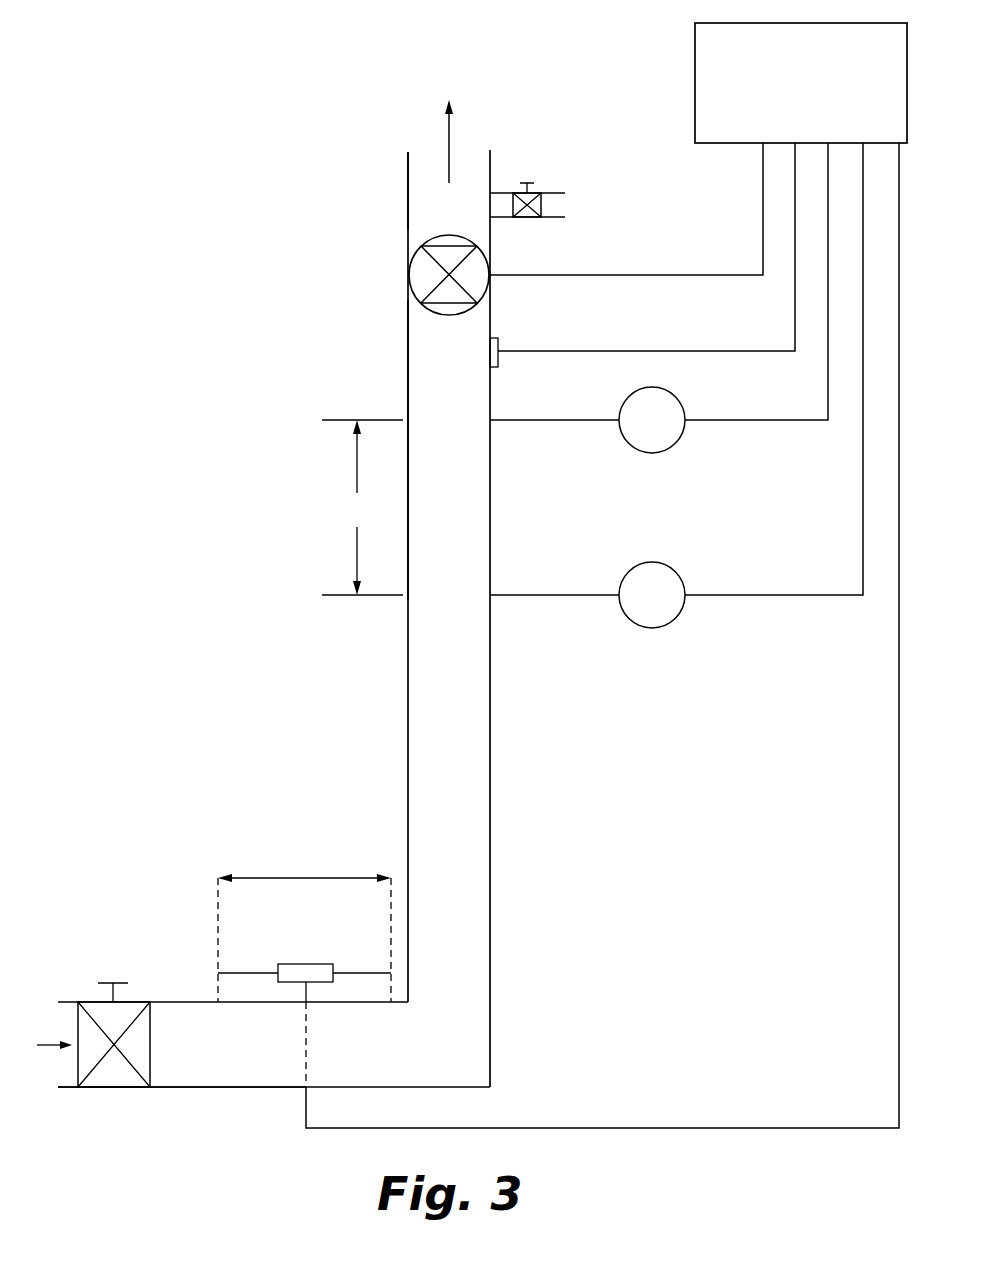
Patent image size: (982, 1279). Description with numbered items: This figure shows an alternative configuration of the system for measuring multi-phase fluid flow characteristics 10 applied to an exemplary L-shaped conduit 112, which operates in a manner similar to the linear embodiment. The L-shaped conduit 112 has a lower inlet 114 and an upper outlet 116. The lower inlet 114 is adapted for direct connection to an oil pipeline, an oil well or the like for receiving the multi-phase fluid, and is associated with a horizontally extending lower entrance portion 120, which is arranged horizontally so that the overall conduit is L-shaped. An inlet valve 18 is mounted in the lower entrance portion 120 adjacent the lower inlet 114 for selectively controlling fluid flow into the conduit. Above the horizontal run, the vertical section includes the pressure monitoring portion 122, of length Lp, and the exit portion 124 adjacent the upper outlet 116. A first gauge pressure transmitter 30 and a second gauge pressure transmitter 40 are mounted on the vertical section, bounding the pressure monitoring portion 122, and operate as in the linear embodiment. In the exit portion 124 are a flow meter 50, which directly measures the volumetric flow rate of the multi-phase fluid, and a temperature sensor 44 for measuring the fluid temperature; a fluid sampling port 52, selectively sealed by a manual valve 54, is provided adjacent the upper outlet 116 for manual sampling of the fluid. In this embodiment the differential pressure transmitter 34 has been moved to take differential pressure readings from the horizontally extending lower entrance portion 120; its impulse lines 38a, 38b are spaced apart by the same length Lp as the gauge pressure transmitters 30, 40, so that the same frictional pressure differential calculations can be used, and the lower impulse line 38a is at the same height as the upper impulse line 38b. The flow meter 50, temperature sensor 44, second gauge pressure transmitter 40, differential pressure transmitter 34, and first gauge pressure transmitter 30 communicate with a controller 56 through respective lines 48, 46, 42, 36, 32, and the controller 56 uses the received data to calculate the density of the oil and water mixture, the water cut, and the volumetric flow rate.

The system for measuring multi-phase fluid flow characteristics 10 is at (334, 76).
The upper outlet 116 is at (418, 150).
The exit portion 124 is at (408, 191).
The flow meter 50 is at (404, 260).
The L-shaped conduit 112 is at (408, 365).
The pressure monitoring portion 122 is at (408, 495).
The manual valve 54 is at (551, 185).
The fluid sampling port 52 is at (552, 218).
The controller 56 is at (695, 100).
The line 48 is at (613, 275).
The temperature sensor 44 is at (500, 340).
The line 46 is at (795, 322).
The second gauge pressure transmitter 40 is at (683, 437).
The line 42 is at (745, 420).
The first gauge pressure transmitter 30 is at (665, 628).
The line 32 is at (825, 596).
The line 36 is at (818, 1127).
The lower impulse line 38a is at (218, 985).
The upper impulse line 38b is at (393, 985).
The differential pressure transmitter 34 is at (305, 962).
The lower inlet 114 is at (59, 1020).
The inlet valve 18 is at (135, 1001).
The lower entrance portion 120 is at (195, 1087).